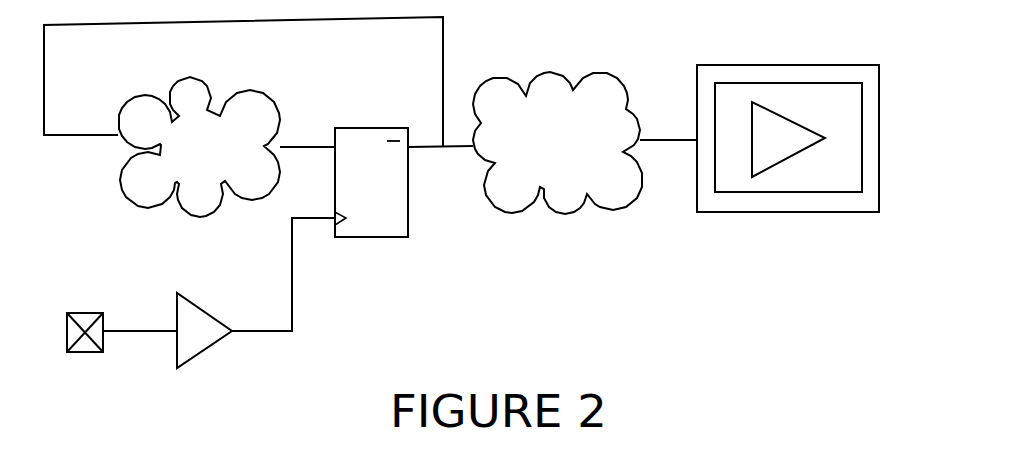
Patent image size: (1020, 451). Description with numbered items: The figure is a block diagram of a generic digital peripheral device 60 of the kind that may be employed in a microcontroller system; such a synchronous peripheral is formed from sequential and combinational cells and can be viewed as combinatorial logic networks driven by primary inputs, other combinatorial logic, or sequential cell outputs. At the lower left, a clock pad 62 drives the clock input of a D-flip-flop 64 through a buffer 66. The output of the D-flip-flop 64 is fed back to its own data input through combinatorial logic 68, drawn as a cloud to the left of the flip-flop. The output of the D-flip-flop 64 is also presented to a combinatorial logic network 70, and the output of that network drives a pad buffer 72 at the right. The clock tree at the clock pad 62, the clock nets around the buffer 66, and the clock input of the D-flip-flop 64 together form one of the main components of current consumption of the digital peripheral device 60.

The digital peripheral device 60 is at (370, 188).
The clock pad 62 is at (109, 337).
The D-flip-flop 64 is at (371, 163).
The buffer 66 is at (212, 327).
The combinatorial logic 68 is at (215, 145).
The combinatorial logic network 70 is at (568, 138).
The pad buffer 72 is at (788, 118).